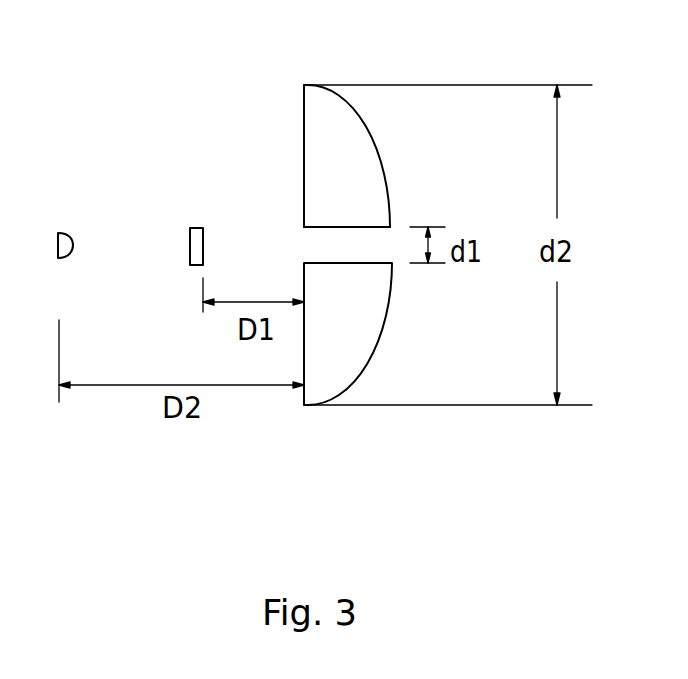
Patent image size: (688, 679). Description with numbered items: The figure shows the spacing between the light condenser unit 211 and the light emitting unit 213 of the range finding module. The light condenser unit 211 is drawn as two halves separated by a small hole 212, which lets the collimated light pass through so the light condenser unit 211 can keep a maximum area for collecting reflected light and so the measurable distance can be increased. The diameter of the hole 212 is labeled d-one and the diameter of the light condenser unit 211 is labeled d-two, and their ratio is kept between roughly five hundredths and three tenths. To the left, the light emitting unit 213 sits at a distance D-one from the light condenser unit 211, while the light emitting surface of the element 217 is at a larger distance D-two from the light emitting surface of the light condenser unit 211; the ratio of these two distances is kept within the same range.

The light condenser unit 211 is at (320, 122).
The hole 212 is at (318, 250).
The light emitting unit 213 is at (197, 227).
The light condenser unit 217 is at (65, 232).